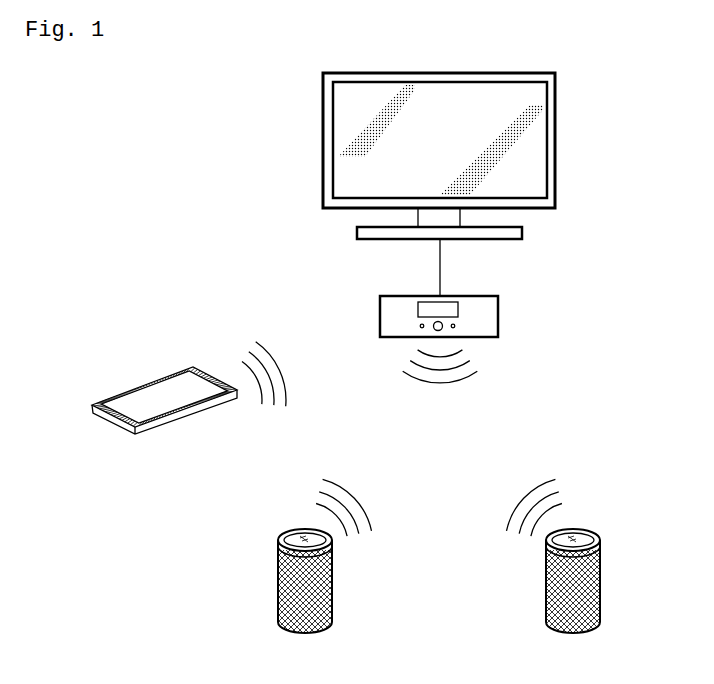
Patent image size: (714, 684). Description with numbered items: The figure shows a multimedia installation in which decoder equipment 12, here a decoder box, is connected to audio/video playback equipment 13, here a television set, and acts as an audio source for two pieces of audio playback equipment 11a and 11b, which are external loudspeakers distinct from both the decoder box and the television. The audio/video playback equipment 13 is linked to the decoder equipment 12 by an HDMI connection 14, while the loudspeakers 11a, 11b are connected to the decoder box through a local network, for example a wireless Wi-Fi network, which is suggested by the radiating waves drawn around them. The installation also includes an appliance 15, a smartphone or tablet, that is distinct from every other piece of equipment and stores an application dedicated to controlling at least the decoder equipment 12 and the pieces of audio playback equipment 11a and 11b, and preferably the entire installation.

The audio playback equipment 11a is at (277, 591).
The audio playback equipment 11b is at (602, 590).
The decoder equipment 12 is at (499, 316).
The audio/video playback equipment 13 is at (523, 233).
The HDMI connection 14 is at (439, 264).
The appliance 15 is at (155, 392).